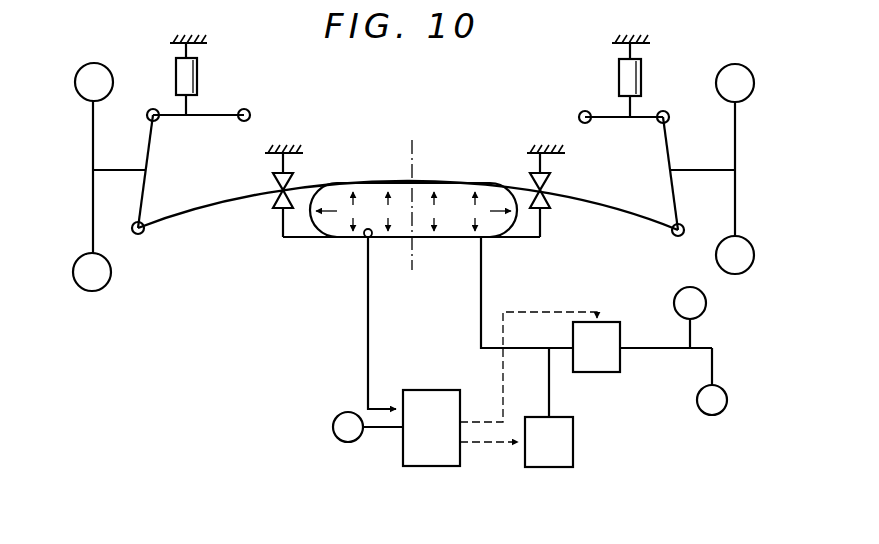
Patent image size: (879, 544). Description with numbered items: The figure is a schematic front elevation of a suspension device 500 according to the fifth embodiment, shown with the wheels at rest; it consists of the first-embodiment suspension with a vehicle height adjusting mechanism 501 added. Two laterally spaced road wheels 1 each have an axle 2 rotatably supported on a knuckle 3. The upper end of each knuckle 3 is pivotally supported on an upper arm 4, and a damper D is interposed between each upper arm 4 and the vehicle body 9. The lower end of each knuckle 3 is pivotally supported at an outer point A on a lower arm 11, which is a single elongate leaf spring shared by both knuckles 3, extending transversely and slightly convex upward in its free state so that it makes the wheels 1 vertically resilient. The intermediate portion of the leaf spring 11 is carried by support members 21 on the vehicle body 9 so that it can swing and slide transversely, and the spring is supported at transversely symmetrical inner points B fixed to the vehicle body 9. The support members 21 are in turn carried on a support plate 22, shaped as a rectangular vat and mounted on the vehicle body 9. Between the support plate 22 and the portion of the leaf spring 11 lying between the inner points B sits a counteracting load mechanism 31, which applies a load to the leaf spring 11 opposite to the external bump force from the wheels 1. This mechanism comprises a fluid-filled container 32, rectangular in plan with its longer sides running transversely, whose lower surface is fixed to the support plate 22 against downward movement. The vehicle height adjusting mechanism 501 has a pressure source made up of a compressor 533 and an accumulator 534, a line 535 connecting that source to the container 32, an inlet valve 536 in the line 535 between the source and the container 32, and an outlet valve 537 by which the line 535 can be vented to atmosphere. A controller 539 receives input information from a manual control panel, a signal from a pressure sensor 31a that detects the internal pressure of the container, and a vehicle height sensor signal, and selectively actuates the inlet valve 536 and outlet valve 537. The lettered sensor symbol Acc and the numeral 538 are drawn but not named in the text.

The road wheel 1 is at (82, 68).
The axle 2 is at (114, 170).
The knuckle 3 is at (150, 152).
The upper arm 4 is at (218, 118).
The vehicle body 9 is at (290, 150).
The lower arm (leaf spring) 11 is at (512, 187).
The support member 21 is at (278, 208).
The support plate 22 is at (305, 240).
The counteracting load mechanism 31 is at (373, 197).
The pressure sensor 31a is at (372, 236).
The container 32 is at (516, 240).
The suspension device 500 is at (303, 323).
The vehicle height adjusting mechanism 501 is at (334, 399).
The compressor 533 is at (714, 417).
The accumulator 534 is at (707, 302).
The line 535 is at (481, 328).
The inlet valve 536 is at (616, 374).
The outlet valve 537 is at (549, 469).
The current sensor I 538 is at (338, 438).
The controller 539 is at (429, 468).
The outer supporting point A is at (138, 238).
The inner supporting point B is at (278, 189).
The damper D is at (199, 73).
The accelerator sensor Acc is at (701, 314).